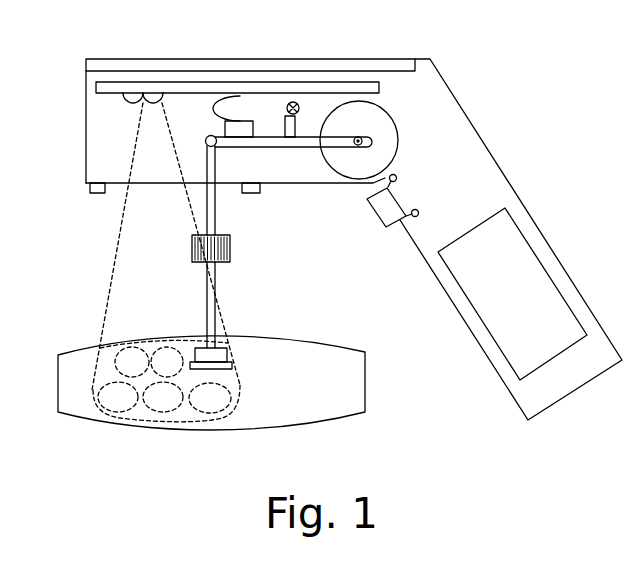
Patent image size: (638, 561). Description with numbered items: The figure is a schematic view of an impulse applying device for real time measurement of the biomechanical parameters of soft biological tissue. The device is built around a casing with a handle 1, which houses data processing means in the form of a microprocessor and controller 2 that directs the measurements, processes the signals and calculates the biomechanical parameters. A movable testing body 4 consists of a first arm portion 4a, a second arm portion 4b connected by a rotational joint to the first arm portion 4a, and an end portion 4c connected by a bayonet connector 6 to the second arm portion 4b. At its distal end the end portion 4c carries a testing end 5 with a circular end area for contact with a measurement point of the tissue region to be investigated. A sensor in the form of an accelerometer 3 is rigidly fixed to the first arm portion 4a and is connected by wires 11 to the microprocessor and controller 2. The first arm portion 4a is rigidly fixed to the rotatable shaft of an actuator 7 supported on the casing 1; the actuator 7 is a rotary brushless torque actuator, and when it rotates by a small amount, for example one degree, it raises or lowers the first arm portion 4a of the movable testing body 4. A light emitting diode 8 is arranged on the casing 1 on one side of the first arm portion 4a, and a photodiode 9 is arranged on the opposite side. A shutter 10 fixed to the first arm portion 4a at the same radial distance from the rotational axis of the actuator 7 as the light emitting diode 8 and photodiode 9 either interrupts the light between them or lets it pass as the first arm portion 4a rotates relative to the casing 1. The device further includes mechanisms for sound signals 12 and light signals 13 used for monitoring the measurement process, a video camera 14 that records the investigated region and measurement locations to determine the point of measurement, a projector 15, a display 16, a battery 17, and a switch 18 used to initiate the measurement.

The casing with a handle 1 is at (430, 63).
The microprocessor and controller 2 is at (379, 88).
The accelerometer 3 is at (247, 128).
The movable testing body 4 is at (289, 242).
The first arm portion 4a is at (273, 138).
The second arm portion 4b is at (209, 208).
The end portion 4c is at (210, 285).
The testing end 5 is at (210, 353).
The bayonet connector 6 is at (217, 247).
The actuator 7 is at (387, 142).
The light emitting diode 8 is at (281, 62).
The photodiode 9 is at (292, 100).
The shutter 10 is at (291, 125).
The wires 11 is at (215, 108).
The mechanism for sound signals 12 is at (88, 187).
The mechanism for light signals 13 is at (244, 185).
The video camera 14 is at (133, 97).
The projector 15 is at (154, 93).
The display 16 is at (123, 63).
The battery 17 is at (500, 230).
The switch 18 is at (387, 212).